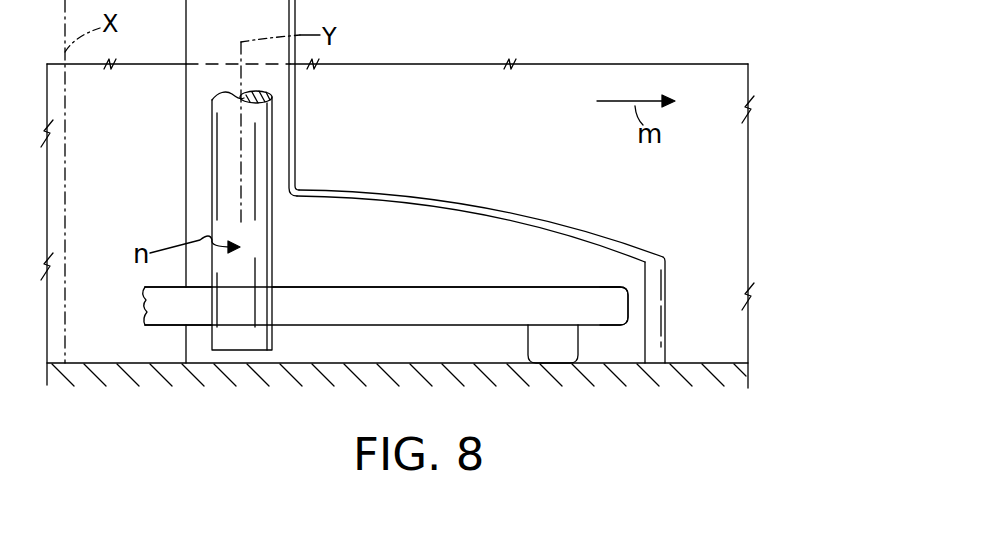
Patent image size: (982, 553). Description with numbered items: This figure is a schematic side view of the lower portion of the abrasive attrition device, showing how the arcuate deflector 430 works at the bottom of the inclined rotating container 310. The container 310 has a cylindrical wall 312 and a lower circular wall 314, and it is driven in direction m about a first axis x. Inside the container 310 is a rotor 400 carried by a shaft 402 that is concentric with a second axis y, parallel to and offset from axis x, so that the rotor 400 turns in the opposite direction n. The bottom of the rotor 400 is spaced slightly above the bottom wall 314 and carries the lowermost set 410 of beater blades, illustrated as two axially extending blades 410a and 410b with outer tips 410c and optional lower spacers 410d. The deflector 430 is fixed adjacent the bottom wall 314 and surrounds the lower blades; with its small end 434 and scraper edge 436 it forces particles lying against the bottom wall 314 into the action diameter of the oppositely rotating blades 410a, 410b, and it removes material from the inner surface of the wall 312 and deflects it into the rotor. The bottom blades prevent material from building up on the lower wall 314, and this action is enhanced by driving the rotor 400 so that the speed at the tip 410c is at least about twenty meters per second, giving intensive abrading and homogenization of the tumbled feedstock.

The container 310 is at (750, 153).
The cylindrical wall 312 is at (397, 39).
The lower circular wall 314 is at (722, 363).
The rotor 400 is at (212, 176).
The shaft 402 is at (262, 140).
The lower set of beater blades 410 is at (459, 333).
The beater blade 410a is at (372, 287).
The beater blade 410b is at (167, 327).
The outer tip 410c is at (628, 298).
The lower spacer 410d is at (563, 352).
The arcuate deflector 430 is at (543, 216).
The small end 434 is at (280, 17).
The scraper edge 436 is at (186, 113).